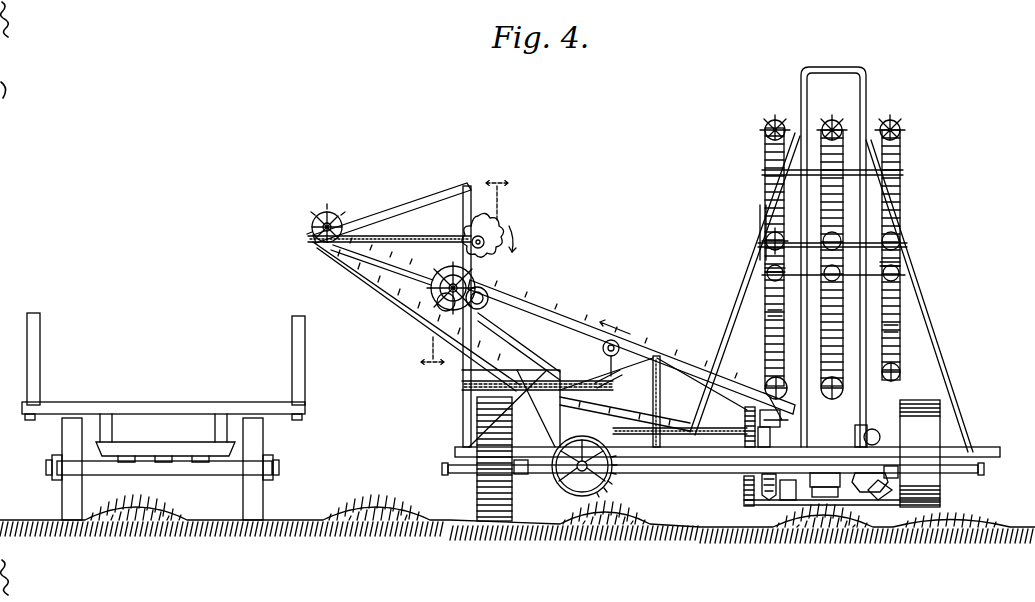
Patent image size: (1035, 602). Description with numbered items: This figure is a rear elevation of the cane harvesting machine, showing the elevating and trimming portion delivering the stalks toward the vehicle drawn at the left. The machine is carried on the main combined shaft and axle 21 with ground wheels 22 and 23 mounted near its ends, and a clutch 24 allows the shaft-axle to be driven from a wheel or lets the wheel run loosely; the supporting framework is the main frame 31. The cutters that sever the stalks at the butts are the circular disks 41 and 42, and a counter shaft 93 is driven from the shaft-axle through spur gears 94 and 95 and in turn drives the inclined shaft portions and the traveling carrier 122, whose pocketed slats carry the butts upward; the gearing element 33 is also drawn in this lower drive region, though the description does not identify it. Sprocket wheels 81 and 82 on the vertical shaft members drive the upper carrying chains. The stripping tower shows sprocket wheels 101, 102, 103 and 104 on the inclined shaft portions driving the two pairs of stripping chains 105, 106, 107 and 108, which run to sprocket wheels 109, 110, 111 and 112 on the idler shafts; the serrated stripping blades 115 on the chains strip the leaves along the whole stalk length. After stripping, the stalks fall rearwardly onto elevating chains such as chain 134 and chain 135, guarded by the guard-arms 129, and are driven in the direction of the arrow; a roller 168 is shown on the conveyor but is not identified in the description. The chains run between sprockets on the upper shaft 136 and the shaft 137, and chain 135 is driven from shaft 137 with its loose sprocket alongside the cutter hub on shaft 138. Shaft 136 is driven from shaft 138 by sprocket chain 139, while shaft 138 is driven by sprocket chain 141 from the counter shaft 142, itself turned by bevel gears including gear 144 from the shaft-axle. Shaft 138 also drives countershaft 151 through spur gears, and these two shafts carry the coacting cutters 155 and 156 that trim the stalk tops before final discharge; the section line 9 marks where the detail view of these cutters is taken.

The section line 9 is at (464, 274).
The main combined shaft and axle 21 is at (445, 468).
The ground wheel 22 is at (480, 482).
The ground wheel 23 is at (940, 487).
The clutch 24 is at (522, 474).
The main frame 31 is at (455, 449).
The gear 33 is at (850, 506).
The circular cutting disk 41 is at (770, 506).
The circular cutting disk 42 is at (890, 506).
The sprocket wheel 81 is at (776, 184).
The sprocket wheel 82 is at (903, 174).
The counter shaft 93 is at (768, 426).
The spur gear 94 is at (738, 419).
The spur gear 95 is at (744, 492).
The sprocket wheel 101 is at (765, 271).
The sprocket wheel 102 is at (770, 382).
The sprocket wheel 103 is at (905, 269).
The sprocket wheel 104 is at (900, 374).
The stripping chain 105 is at (766, 223).
The stripping chain 106 is at (896, 228).
The stripping chain 107 is at (768, 315).
The stripping chain 108 is at (905, 334).
The sprocket wheel 109 is at (774, 122).
The sprocket wheel 110 is at (896, 124).
The sprocket wheel 111 is at (766, 245).
The sprocket wheel 112 is at (907, 247).
The stripping blade 115 is at (767, 154).
The traveling carrier 122 is at (825, 506).
The guard-arm 129 is at (821, 383).
The elevating chain 134 is at (361, 222).
The elevating chain 135 is at (580, 313).
The upper shaft 136 is at (312, 224).
The shaft 137 is at (878, 432).
The shaft 138 is at (442, 310).
The sprocket chain 139 is at (431, 279).
The sprocket chain 141 is at (512, 333).
The counter shaft 142 is at (574, 478).
The bevel gear 144 is at (610, 489).
The countershaft 151 is at (484, 238).
The cutter 155 is at (514, 245).
The cutter 156 is at (467, 306).
The roller 168 is at (604, 349).